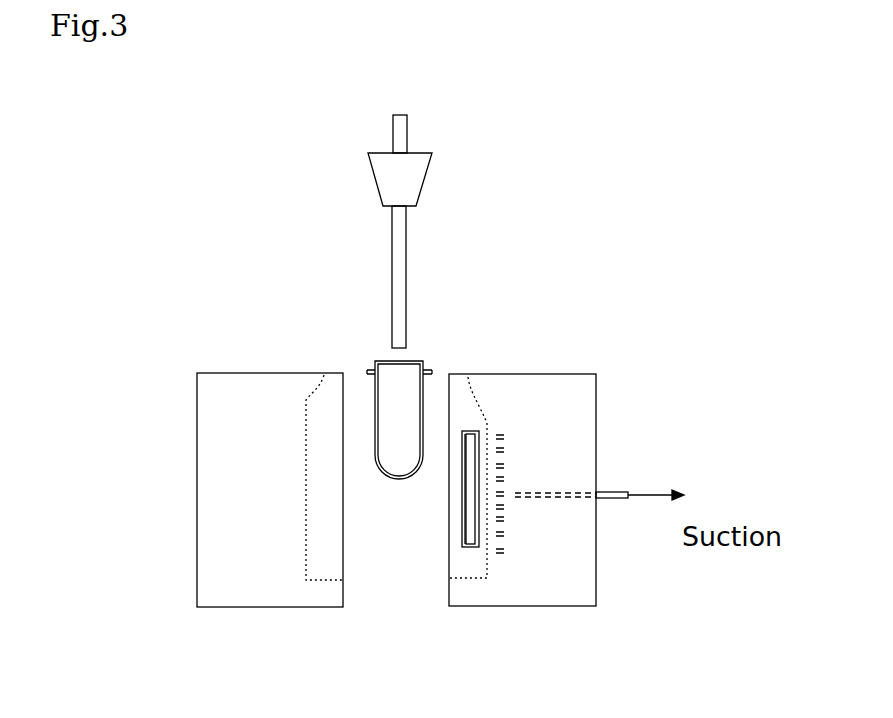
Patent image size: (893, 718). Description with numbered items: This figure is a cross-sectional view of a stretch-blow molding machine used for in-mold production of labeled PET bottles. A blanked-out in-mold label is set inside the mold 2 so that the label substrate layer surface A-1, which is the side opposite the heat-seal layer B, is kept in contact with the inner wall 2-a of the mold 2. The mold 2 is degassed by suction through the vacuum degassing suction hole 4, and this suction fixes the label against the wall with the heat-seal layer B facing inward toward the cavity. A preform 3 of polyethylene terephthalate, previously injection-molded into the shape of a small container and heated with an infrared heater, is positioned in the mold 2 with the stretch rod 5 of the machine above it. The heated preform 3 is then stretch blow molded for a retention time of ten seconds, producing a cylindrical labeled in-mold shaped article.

The mold 2 is at (525, 398).
The inner wall 2-a is at (490, 425).
The surface of a label substrate layer A-1 is at (475, 467).
The heat-seal layer B is at (465, 492).
The preform 3 is at (403, 388).
The suction hole 4 is at (490, 553).
The stretch rod 5 is at (405, 283).